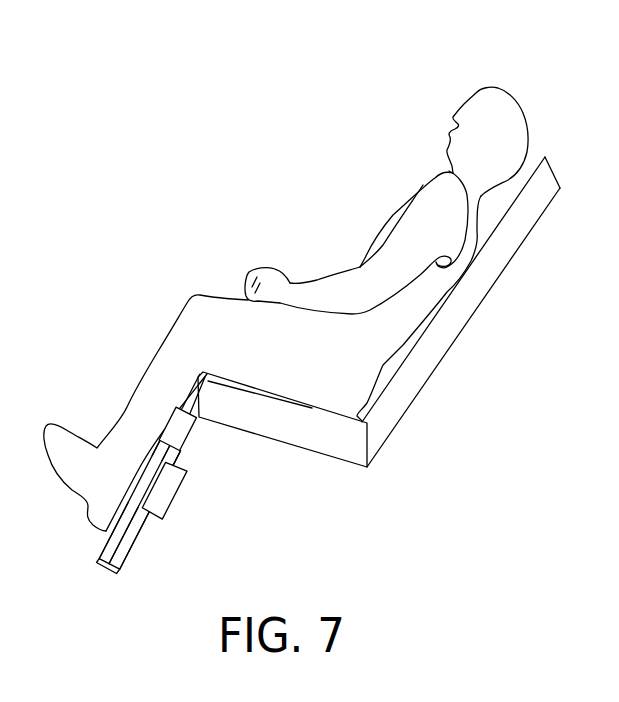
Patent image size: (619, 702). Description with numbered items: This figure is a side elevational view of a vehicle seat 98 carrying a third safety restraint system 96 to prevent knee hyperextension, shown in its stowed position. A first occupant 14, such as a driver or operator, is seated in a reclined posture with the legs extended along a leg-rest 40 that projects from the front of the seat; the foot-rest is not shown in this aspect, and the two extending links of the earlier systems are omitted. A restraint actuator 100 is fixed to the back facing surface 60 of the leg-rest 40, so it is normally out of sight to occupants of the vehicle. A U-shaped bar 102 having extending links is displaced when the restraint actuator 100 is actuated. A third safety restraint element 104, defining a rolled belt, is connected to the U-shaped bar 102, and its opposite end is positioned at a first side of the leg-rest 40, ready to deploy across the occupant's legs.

The first occupant 14 is at (323, 277).
The third safety restraint system 96 is at (553, 77).
The vehicle seat 98 is at (527, 318).
The leg-rest 40 is at (105, 553).
The back facing surface 60 is at (185, 465).
The restraint actuator 100 is at (183, 513).
The U-shaped bar 102 is at (146, 560).
The third safety restraint element 104 is at (199, 444).